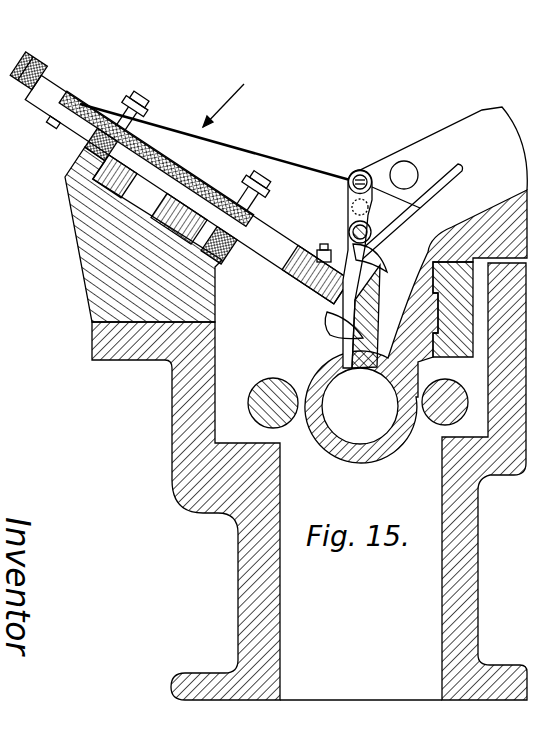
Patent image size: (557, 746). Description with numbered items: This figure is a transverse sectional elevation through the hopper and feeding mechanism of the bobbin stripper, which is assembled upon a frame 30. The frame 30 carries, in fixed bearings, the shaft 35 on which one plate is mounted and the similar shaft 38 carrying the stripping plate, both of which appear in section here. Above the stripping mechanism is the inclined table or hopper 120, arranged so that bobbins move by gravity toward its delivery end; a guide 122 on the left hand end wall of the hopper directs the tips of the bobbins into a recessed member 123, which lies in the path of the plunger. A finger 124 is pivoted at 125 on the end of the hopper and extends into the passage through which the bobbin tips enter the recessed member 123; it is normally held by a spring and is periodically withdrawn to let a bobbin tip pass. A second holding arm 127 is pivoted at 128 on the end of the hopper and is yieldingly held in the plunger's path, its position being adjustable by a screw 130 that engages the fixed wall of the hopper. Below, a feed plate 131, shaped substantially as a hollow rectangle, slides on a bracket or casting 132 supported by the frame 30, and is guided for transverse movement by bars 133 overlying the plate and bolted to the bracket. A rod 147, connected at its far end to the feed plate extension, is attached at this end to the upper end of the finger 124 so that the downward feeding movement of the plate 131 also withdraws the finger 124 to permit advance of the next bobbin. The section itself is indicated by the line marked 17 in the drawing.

The section direction arrow 17 is at (228, 95).
The frame 30 is at (172, 416).
The shaft 35 is at (462, 390).
The shaft 38 is at (261, 381).
The inclined table or hopper 120 is at (483, 109).
The guide 122 is at (447, 176).
The recessed member 123 is at (328, 418).
The finger 124 is at (381, 266).
The pivot 125 is at (416, 211).
The holding arm 127 is at (330, 320).
The pivot 128 is at (351, 172).
The screw 130 is at (331, 250).
The feed plate 131 is at (293, 275).
The bracket or casting 132 is at (75, 246).
The bars 133 is at (265, 211).
The rod 147 is at (232, 139).